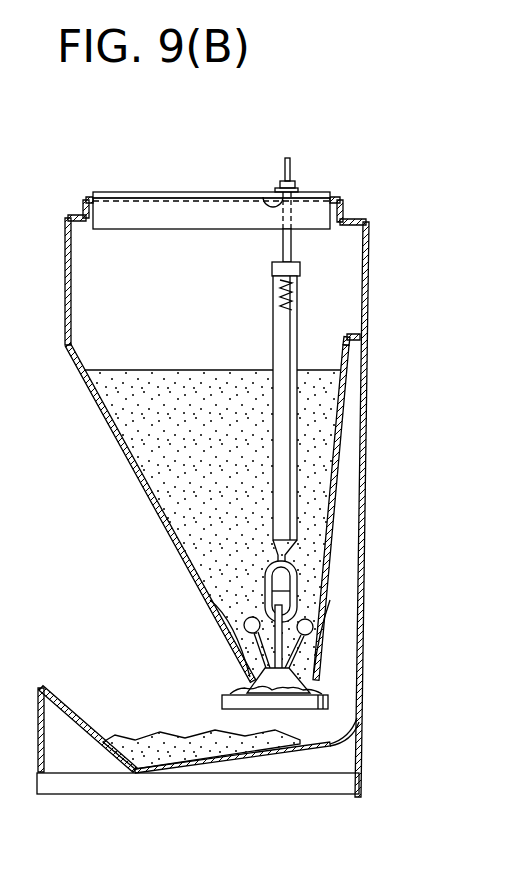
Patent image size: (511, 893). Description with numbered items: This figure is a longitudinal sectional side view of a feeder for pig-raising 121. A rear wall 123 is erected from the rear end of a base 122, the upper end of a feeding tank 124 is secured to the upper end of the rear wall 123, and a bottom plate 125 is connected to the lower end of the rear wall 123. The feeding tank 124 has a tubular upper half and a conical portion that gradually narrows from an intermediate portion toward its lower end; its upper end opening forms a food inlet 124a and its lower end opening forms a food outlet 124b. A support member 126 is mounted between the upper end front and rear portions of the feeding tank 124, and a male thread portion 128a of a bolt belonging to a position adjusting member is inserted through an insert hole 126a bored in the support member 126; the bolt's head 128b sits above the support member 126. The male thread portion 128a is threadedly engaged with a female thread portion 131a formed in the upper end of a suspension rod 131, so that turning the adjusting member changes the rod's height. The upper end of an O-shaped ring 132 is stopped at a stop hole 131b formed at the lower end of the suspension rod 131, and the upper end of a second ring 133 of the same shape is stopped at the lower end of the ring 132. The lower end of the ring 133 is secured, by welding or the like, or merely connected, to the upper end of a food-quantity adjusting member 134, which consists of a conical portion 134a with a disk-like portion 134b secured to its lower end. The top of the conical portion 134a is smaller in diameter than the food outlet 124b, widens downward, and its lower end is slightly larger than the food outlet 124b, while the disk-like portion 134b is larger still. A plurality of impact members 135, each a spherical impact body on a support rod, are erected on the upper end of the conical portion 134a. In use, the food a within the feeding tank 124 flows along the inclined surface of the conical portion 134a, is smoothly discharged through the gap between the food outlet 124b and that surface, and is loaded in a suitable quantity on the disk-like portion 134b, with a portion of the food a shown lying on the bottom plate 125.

The feeder for pig-raising 121 is at (372, 167).
The base 122 is at (207, 790).
The rear wall 123 is at (363, 467).
The feeding tank 124 is at (102, 245).
The food inlet 124a is at (177, 243).
The food outlet 124b is at (245, 686).
The bottom plate 125 is at (273, 762).
The support member 126 is at (137, 210).
The insert hole 126a is at (263, 207).
The male thread portion 128a is at (300, 262).
The head 128b is at (296, 183).
The suspension rod 131 is at (292, 398).
The female thread portion 131a is at (302, 300).
The stop hole 131b is at (288, 549).
The O-shaped ring 132 is at (298, 578).
The ring 133 is at (297, 612).
The food-quantity adjusting member 134 is at (353, 753).
The conical portion 134a is at (320, 681).
The disk-like portion 134b is at (320, 704).
The impact members 135 is at (212, 604).
The food a is at (148, 446).